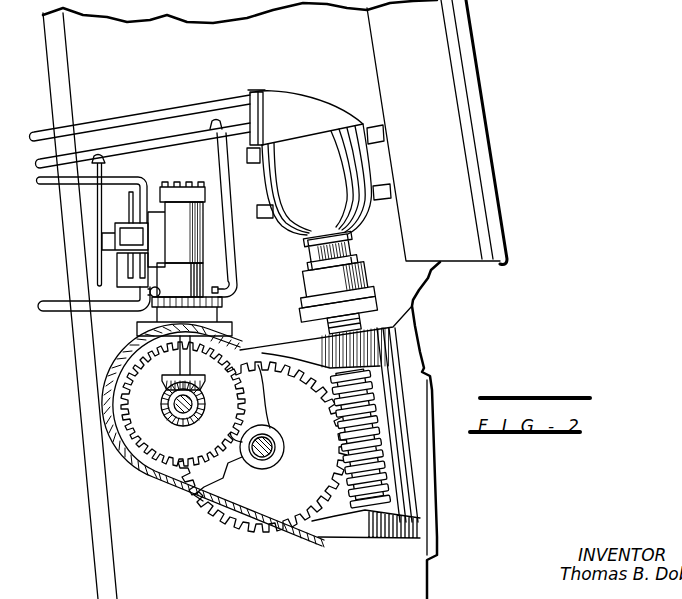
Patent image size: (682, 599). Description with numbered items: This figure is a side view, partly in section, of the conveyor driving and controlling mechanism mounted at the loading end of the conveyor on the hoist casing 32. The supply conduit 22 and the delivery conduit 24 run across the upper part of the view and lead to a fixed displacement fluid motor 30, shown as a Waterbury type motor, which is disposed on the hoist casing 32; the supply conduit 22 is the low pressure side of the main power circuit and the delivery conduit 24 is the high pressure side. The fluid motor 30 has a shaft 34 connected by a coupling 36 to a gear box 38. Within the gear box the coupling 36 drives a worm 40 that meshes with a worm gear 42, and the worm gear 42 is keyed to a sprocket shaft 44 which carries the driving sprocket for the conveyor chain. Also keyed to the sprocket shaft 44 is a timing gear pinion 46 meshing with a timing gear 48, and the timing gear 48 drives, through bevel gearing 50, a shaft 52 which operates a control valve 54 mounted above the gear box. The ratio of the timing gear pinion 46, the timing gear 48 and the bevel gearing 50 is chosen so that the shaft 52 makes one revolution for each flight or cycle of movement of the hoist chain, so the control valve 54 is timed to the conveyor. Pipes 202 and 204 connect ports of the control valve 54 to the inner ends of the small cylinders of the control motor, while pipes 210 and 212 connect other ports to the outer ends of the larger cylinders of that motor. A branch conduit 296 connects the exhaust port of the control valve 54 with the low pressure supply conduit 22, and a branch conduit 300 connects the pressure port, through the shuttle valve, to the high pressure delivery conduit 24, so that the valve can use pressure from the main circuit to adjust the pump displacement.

The hoist casing 32 is at (275, 299).
The supply conduit 22 is at (147, 115).
The delivery conduit 24 is at (169, 143).
The pipe 204 is at (139, 181).
The pipe 202 is at (128, 198).
The branch conduit 300 is at (97, 212).
The pipe 212 is at (122, 279).
The pipe 210 is at (62, 313).
The control valve 54 is at (172, 229).
The branch conduit 296 is at (238, 261).
The fixed displacement fluid motor 30 is at (319, 162).
The shaft 34 is at (342, 262).
The coupling 36 is at (366, 286).
The gear box 38 is at (300, 345).
The worm 40 is at (377, 397).
The shaft 52 is at (176, 362).
The bevel gearing 50 is at (162, 407).
The sprocket shaft 44 is at (272, 442).
The worm gear 42 is at (262, 447).
The timing gear pinion 46 is at (233, 473).
The timing gear 48 is at (170, 482).